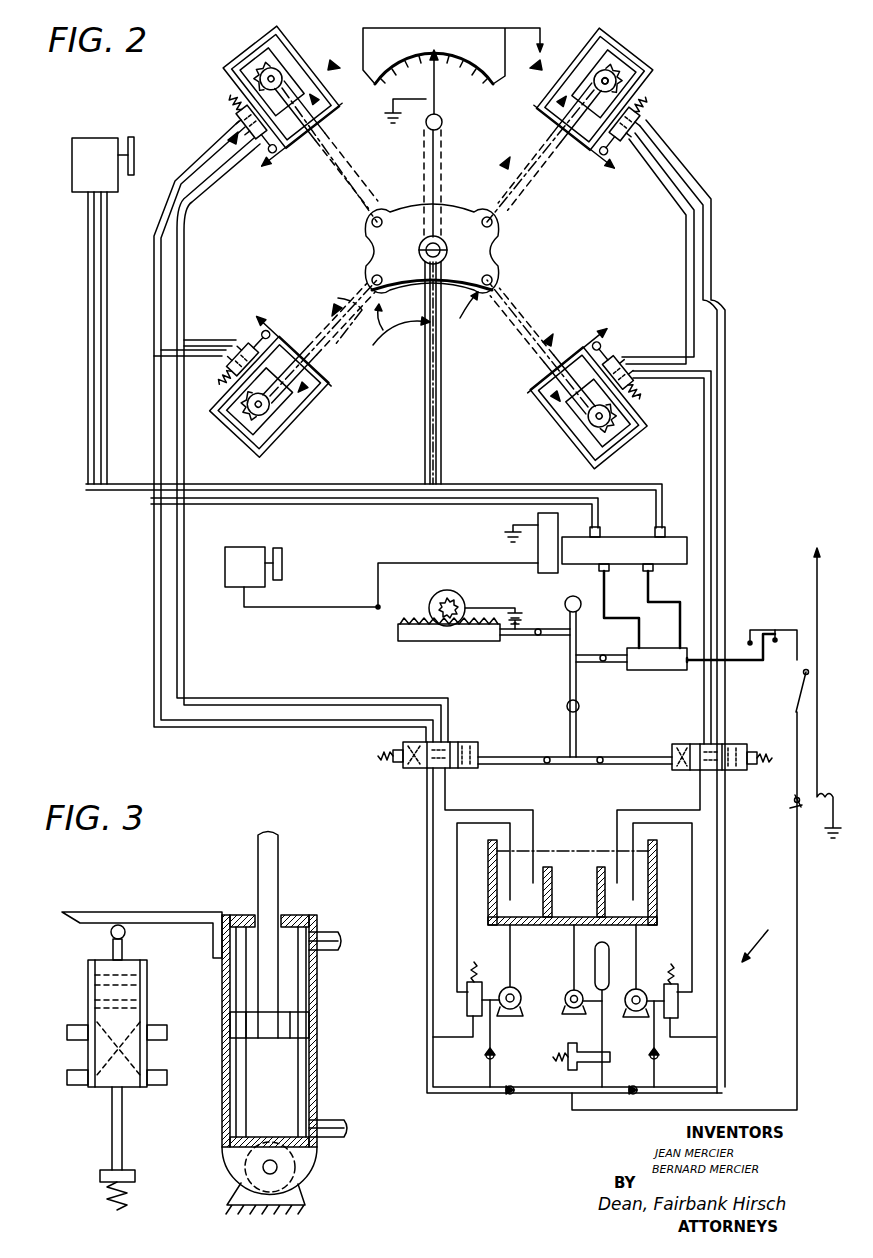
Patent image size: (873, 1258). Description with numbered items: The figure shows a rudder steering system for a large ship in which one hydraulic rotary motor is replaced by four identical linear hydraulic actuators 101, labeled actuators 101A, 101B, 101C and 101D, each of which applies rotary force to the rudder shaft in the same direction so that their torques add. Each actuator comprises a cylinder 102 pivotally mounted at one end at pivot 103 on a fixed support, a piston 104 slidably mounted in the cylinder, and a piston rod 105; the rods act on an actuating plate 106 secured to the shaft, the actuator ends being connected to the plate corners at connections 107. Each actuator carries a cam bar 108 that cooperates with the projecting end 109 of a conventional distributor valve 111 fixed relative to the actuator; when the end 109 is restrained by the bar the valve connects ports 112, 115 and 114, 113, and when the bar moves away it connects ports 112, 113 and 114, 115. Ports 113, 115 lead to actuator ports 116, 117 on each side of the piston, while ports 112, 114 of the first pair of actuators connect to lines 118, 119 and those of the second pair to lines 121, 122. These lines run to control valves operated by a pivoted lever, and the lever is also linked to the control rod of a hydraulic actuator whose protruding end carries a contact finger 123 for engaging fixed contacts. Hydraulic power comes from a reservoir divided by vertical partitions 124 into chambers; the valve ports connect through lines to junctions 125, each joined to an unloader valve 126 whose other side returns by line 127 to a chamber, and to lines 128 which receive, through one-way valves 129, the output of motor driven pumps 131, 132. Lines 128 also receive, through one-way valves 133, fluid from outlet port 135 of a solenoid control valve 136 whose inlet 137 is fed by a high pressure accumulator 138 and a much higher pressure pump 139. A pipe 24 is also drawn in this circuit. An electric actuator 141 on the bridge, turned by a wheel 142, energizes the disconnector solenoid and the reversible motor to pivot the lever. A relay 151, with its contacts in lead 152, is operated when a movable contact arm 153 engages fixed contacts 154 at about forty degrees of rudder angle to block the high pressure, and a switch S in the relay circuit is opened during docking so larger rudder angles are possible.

In FIG. 2, the pipe 24 is at (535, 766).
In FIG. 3, the hydraulic actuator 101 is at (337, 1043).
In FIG. 2, the hydraulic actuator 101A is at (282, 109).
In FIG. 2, the hydraulic actuator 101B is at (279, 375).
In FIG. 2, the hydraulic actuator 101C is at (592, 245).
In FIG. 2, the hydraulic actuator 101D is at (548, 382).
In FIG. 3, the cylinder 102 is at (318, 978).
In FIG. 2, the pivot 103 is at (618, 84).
In FIG. 3, the pivot 103 is at (278, 1168).
In FIG. 3, the piston 104 is at (258, 1030).
In FIG. 3, the piston rod 105 is at (270, 897).
In FIG. 2, the actuating plate 106 is at (414, 214).
In FIG. 2, the corner connection 107 is at (371, 222).
In FIG. 2, the cam bar 108 is at (290, 330).
In FIG. 3, the cam bar 108 is at (180, 912).
In FIG. 3, the projecting end 109 is at (111, 934).
In FIG. 2, the distributor valve 111 is at (206, 161).
In FIG. 3, the distributor valve 111 is at (152, 1061).
In FIG. 2, the port 112 is at (238, 118).
In FIG. 3, the port 112 is at (74, 1083).
In FIG. 2, the port 113 is at (236, 98).
In FIG. 3, the port 113 is at (162, 1088).
In FIG. 2, the port 114 is at (270, 152).
In FIG. 3, the port 114 is at (68, 1032).
In FIG. 2, the port 115 is at (268, 164).
In FIG. 3, the port 115 is at (157, 1027).
In FIG. 2, the actuator port 116 is at (314, 112).
In FIG. 3, the actuator port 116 is at (328, 940).
In FIG. 2, the actuator port 117 is at (277, 69).
In FIG. 3, the actuator port 117 is at (322, 1127).
In FIG. 2, the line 118 is at (185, 276).
In FIG. 2, the line 119 is at (153, 294).
In FIG. 2, the line 121 is at (712, 448).
In FIG. 2, the line 122 is at (726, 482).
In FIG. 2, the contact finger 123 is at (768, 660).
In FIG. 2, the vertical partition 124 is at (561, 858).
In FIG. 2, the junction 125 is at (427, 1033).
In FIG. 2, the unloader valve 126 is at (467, 1000).
In FIG. 2, the line 127 is at (460, 942).
In FIG. 2, the line 128 is at (680, 1088).
In FIG. 2, the one-way valve 129 is at (495, 1055).
In FIG. 2, the motor driven pump 131 is at (518, 989).
In FIG. 2, the motor driven pump 132 is at (628, 1008).
In FIG. 2, the one-way valve 133 is at (510, 1095).
In FIG. 2, the outlet port 135 is at (574, 1066).
In FIG. 2, the solenoid control valve 136 is at (570, 1050).
In FIG. 2, the inlet 137 is at (594, 1050).
In FIG. 2, the high pressure accumulator 138 is at (609, 960).
In FIG. 2, the motor driven pump 139 is at (565, 998).
In FIG. 2, the electric actuator 141 is at (262, 538).
In FIG. 2, the wheel 142 is at (284, 566).
In FIG. 2, the relay 151 is at (801, 814).
In FIG. 2, the lead 152 is at (798, 960).
In FIG. 2, the movable contact arm 153 is at (441, 88).
In FIG. 2, the fixed contacts 154 is at (378, 80).
In FIG. 2, the switch S is at (805, 682).